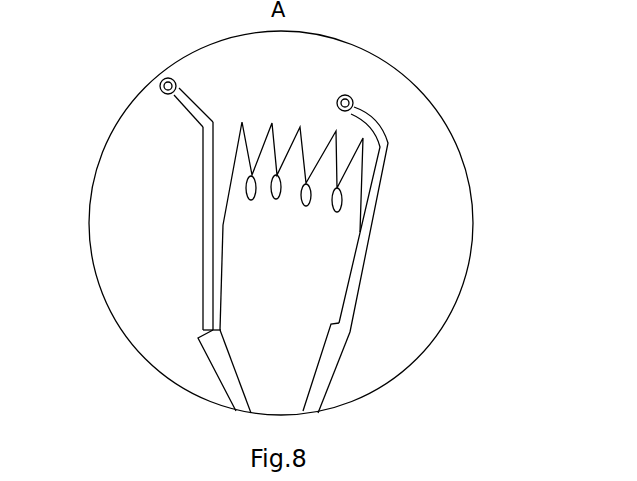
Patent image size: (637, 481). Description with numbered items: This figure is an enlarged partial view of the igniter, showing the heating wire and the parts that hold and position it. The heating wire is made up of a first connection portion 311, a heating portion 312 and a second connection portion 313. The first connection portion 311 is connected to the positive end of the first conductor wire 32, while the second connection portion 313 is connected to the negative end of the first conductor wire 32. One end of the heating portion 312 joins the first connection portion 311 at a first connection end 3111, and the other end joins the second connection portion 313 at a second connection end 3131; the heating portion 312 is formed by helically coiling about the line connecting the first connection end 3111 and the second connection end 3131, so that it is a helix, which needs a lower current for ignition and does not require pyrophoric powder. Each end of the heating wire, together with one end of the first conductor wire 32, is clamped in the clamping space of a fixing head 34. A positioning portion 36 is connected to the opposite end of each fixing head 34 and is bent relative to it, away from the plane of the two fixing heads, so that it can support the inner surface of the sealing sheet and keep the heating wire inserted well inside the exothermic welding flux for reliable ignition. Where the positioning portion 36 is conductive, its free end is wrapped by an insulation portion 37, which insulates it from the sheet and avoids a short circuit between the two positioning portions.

The first conductor wire 32 is at (229, 369).
The fixing head 34 is at (203, 248).
The positioning portion 36 is at (186, 108).
The insulation portion 37 is at (160, 89).
The first connection portion 311 is at (227, 254).
The first connection end 3111 is at (222, 262).
The heating portion 312 is at (300, 200).
The second connection portion 313 is at (300, 197).
The second connection end 3131 is at (376, 132).